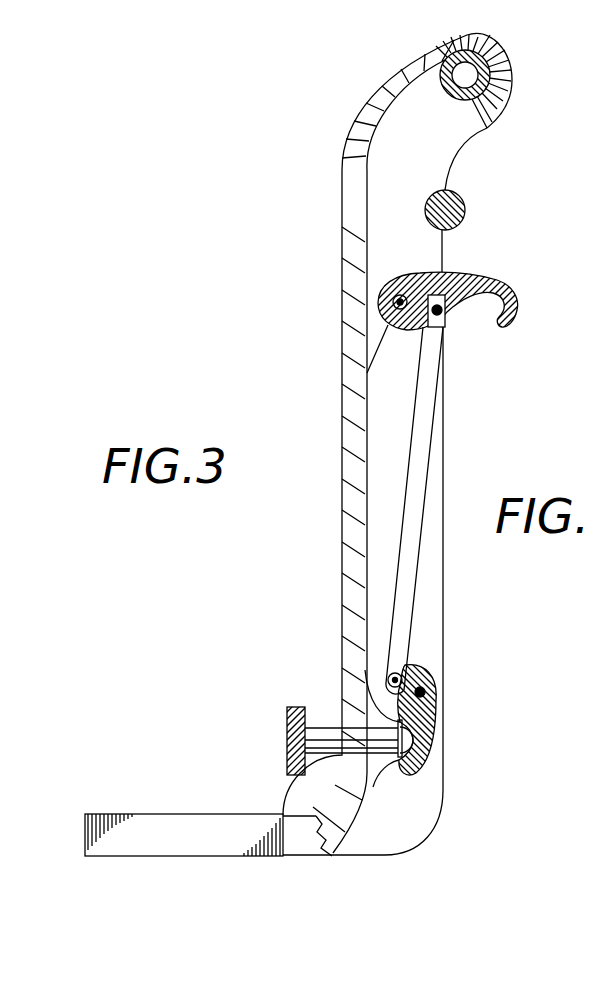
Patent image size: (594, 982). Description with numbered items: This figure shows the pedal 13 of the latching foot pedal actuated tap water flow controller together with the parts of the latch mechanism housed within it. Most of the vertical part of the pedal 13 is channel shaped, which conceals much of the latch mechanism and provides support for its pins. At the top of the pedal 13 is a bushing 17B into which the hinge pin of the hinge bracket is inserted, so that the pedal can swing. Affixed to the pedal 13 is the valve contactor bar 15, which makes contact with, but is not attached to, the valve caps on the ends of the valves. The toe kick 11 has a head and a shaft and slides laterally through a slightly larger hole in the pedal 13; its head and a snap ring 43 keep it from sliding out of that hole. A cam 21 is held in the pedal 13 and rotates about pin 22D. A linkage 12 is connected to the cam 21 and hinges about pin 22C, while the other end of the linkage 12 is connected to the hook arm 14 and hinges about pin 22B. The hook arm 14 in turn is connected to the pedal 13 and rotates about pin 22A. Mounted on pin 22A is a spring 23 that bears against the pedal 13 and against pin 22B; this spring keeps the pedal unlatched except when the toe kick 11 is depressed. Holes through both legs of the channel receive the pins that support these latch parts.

The toe kick 11 is at (287, 727).
The linkage 12 is at (430, 412).
The pedal 13 is at (342, 575).
The hook arm 14 is at (518, 291).
The valve contactor bar 15 is at (465, 207).
The bushing 17B is at (490, 78).
The cam 21 is at (436, 706).
The pin 22A is at (400, 302).
The pin 22B is at (445, 312).
The pin 22C is at (390, 681).
The pin 22D is at (425, 692).
The spring 23 is at (367, 350).
The snap ring 43 is at (399, 760).